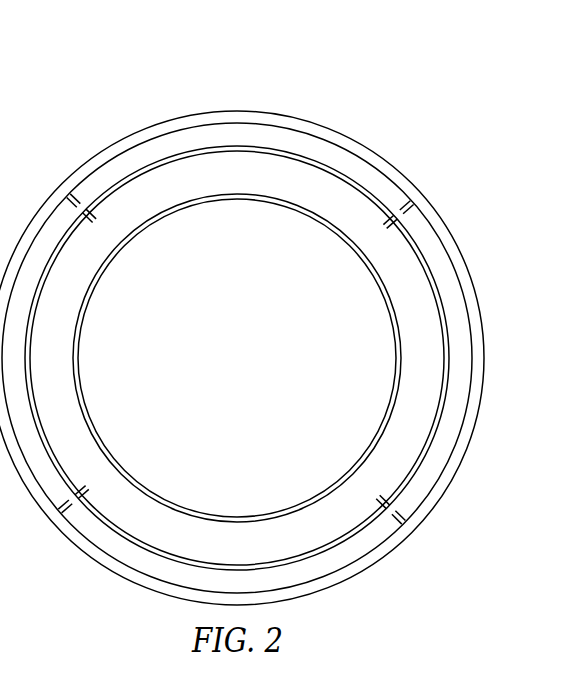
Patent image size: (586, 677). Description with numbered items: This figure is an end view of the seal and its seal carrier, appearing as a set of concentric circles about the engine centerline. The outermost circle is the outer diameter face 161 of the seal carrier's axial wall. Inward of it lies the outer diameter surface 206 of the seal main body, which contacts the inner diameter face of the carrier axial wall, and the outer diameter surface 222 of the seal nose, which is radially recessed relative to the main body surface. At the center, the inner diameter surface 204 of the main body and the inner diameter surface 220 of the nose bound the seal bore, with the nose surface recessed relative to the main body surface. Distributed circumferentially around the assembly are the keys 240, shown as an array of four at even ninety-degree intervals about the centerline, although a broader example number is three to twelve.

The outer diameter face 161 is at (238, 122).
The outer diameter surface 222 is at (343, 152).
The outer diameter surface 206 is at (327, 170).
The inner diameter surface 220 is at (162, 212).
The inner diameter surface 204 is at (98, 280).
The keys 240 is at (68, 178).